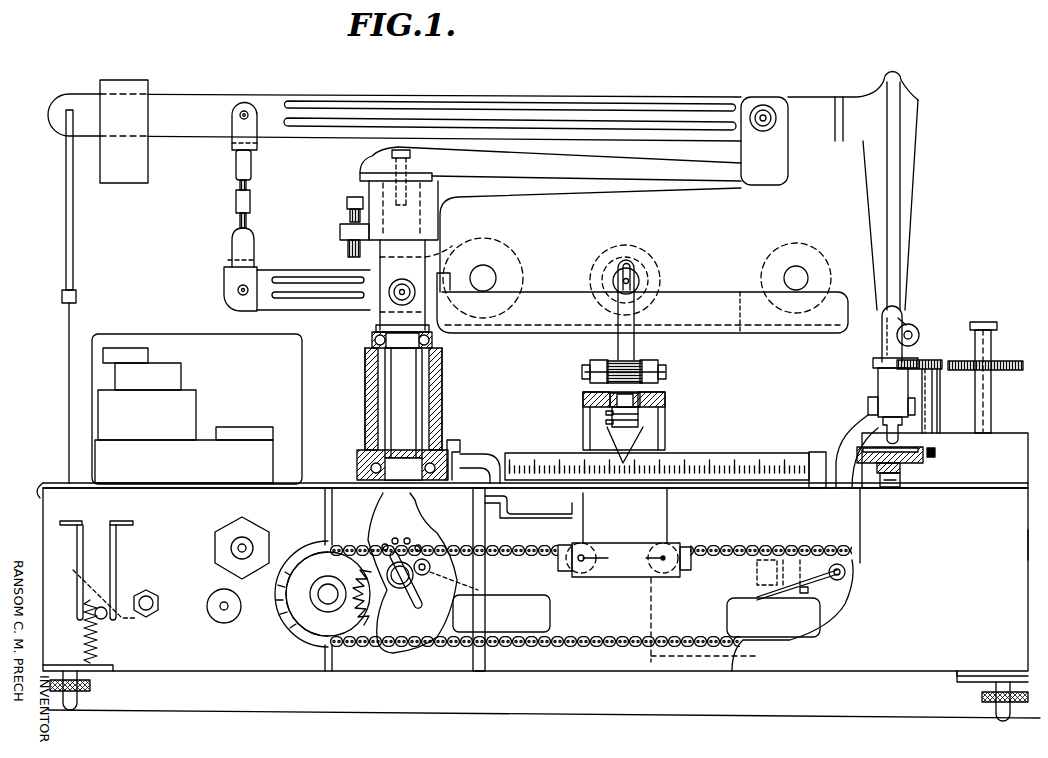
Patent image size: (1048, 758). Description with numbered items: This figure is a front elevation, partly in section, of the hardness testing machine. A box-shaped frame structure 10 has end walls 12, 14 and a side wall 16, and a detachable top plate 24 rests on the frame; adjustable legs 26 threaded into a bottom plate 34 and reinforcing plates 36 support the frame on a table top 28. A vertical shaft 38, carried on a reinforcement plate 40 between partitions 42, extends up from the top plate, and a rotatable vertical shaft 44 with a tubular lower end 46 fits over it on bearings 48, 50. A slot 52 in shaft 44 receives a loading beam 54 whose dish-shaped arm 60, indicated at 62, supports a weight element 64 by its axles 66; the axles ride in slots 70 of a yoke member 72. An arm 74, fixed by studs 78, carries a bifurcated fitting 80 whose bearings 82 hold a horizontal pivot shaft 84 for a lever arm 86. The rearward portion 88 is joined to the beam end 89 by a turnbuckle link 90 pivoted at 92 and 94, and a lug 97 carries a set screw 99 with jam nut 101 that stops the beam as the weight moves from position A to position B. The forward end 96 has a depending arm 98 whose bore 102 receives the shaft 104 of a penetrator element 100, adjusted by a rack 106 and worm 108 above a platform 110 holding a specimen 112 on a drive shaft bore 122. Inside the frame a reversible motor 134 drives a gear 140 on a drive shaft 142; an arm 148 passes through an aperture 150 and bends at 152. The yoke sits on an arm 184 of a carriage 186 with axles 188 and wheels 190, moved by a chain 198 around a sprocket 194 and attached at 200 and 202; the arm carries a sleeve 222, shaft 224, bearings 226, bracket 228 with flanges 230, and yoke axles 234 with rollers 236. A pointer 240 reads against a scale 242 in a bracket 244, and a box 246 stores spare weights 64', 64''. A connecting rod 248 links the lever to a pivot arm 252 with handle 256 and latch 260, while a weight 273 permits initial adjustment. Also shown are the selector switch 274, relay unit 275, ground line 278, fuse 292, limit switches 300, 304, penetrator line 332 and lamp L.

The box-shaped frame structure 10 is at (1028, 494).
The end wall 12 is at (1028, 558).
The end wall 14 is at (40, 498).
The side wall 16 is at (997, 585).
The top wall or plate 24 is at (966, 496).
The legs 26 is at (90, 688).
The table top 28 is at (518, 714).
The bottom plate 34 is at (430, 672).
The reinforcing plates 36 is at (1022, 662).
The vertical shaft 38 is at (419, 393).
The reinforcement plate 40 is at (422, 502).
The reinforcement partitions 42 is at (325, 510).
The vertical shaft 44 is at (437, 246).
The tubular lower end 46 is at (443, 357).
The bearing 48 is at (362, 452).
The bearing 50 is at (372, 339).
The slot 52 is at (440, 262).
The loading beam 54 is at (540, 291).
The arm of loading beam 60 is at (702, 291).
The dish-shaped portion 62 is at (740, 303).
The weight element 64 is at (625, 268).
The spare weight 64' is at (991, 377).
The spare weight 64'' is at (935, 381).
The axle or hub 66 is at (639, 275).
The slots of yoke member 70 is at (622, 262).
The yoke member 72 is at (634, 312).
The arm 74 is at (703, 190).
The studs 78 is at (401, 148).
The bifurcated fitting 80 is at (789, 150).
The bearings 82 is at (770, 108).
The horizontal pivot shaft 84 is at (768, 116).
The lever arm 86 is at (657, 97).
The rearward portion of lever arm 88 is at (466, 96).
The end of loading beam 89 is at (316, 271).
The connecting link or rod 90 is at (236, 170).
The pivotal connection 92 is at (237, 291).
The pivotal connection 94 is at (245, 111).
The forward end of lever arm 96 is at (862, 97).
The lug 97 is at (340, 232).
The downwardly extending arm 98 is at (908, 230).
The set screw 99 is at (350, 215).
The penetrator element 100 is at (877, 388).
The jam nut 101 is at (345, 222).
The axial bore 102 is at (882, 341).
The shaft 104 is at (917, 330).
The rack 106 is at (902, 322).
The worm 108 is at (912, 330).
The platform 110 is at (935, 453).
The specimen 112 is at (905, 448).
The axially extending bore 122 is at (900, 479).
The reversible electric motor 134 is at (650, 599).
The gear 140 is at (808, 549).
The drive shaft 142 is at (851, 600).
The arm 148 is at (470, 462).
The aperture 150 is at (508, 467).
The angled portion of arm 152 is at (578, 515).
The arm 184 is at (665, 396).
The carriage member 186 is at (664, 512).
The axles 188 is at (626, 560).
The wheels 190 is at (574, 568).
The pulley or sprocket 194 is at (290, 640).
The chain drive 198 is at (738, 547).
The chain connection 200 is at (573, 543).
The chain connection 202 is at (714, 528).
The tubular sleeve 222 is at (645, 420).
The shaft 224 is at (648, 403).
The bearing assemblies 226 is at (606, 422).
The bracket member 228 is at (660, 366).
The upstanding flanges 230 is at (596, 360).
The axles 234 is at (647, 360).
The rollers 236 is at (666, 376).
The pointer element 240 is at (640, 440).
The scale 242 is at (763, 452).
The bracket 244 is at (818, 452).
The box structure 246 is at (1005, 433).
The connecting rod 248 is at (66, 212).
The pivot arm 252 is at (88, 532).
The handle portion 256 is at (68, 521).
The latch mechanism 260 is at (100, 587).
The weight element 273 is at (122, 184).
The multi-tap selector switch 274 is at (393, 594).
The current sensitive relay unit 275 is at (108, 334).
The current conducting line 278 is at (446, 579).
The fuse 292 is at (214, 619).
The limit switch 300 is at (497, 590).
The limit switch 304 is at (733, 598).
The current conducting line 332 is at (845, 490).
The position A is at (518, 262).
The position B is at (820, 255).
The light bulb L is at (223, 533).